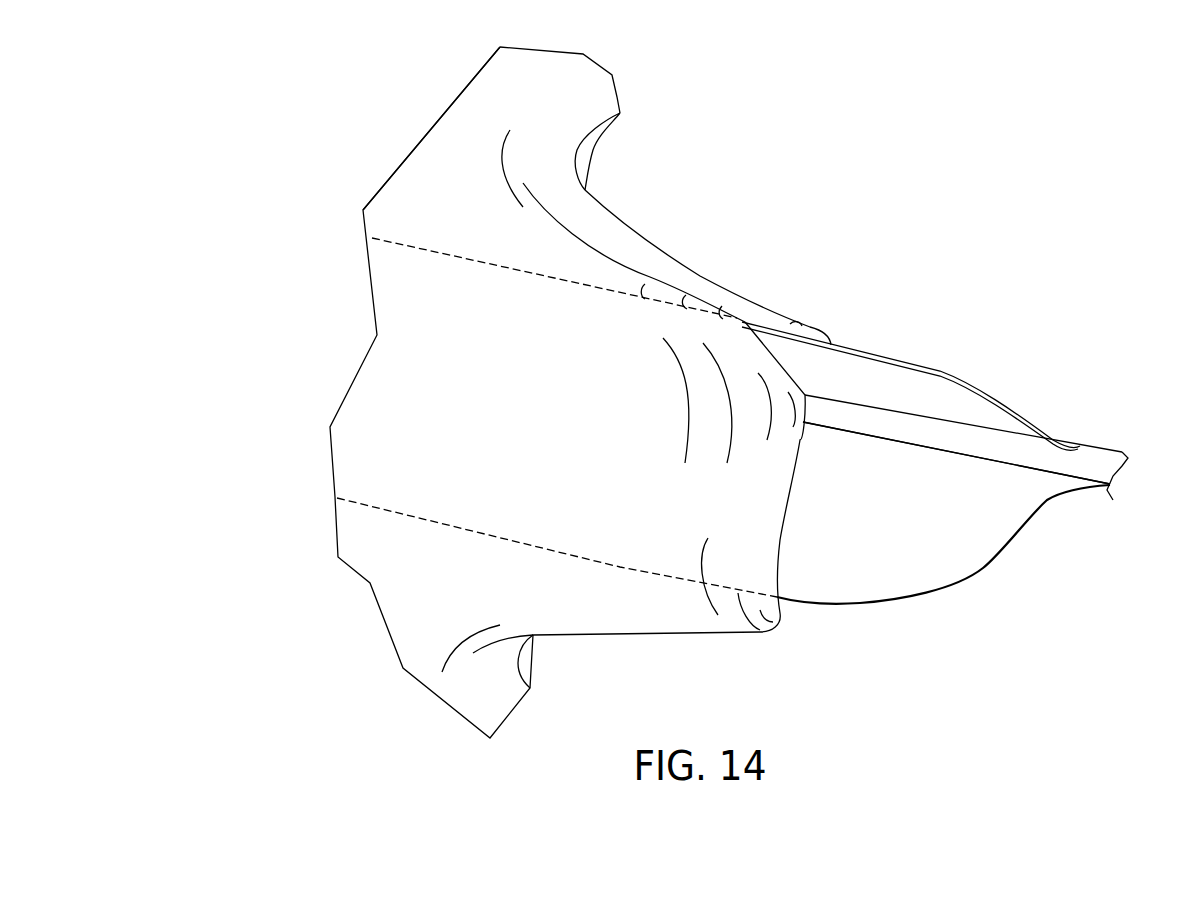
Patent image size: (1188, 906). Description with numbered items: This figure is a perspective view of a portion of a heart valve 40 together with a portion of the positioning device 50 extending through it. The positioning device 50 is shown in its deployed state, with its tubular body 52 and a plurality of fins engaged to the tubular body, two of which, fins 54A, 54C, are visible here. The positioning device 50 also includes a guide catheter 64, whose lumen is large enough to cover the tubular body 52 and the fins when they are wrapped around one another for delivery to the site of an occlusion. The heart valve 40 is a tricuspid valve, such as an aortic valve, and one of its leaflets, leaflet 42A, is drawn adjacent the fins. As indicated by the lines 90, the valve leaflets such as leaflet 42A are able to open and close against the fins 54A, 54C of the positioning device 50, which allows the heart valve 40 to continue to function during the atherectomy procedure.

The heart valve 40 is at (333, 231).
The guide catheter 64 is at (428, 172).
The leaflet 42A is at (573, 424).
The lines 90 is at (652, 385).
The positioning device 50 is at (1027, 392).
The fin 54A is at (905, 398).
The tubular body 52 is at (1093, 447).
The fin 54C is at (849, 537).